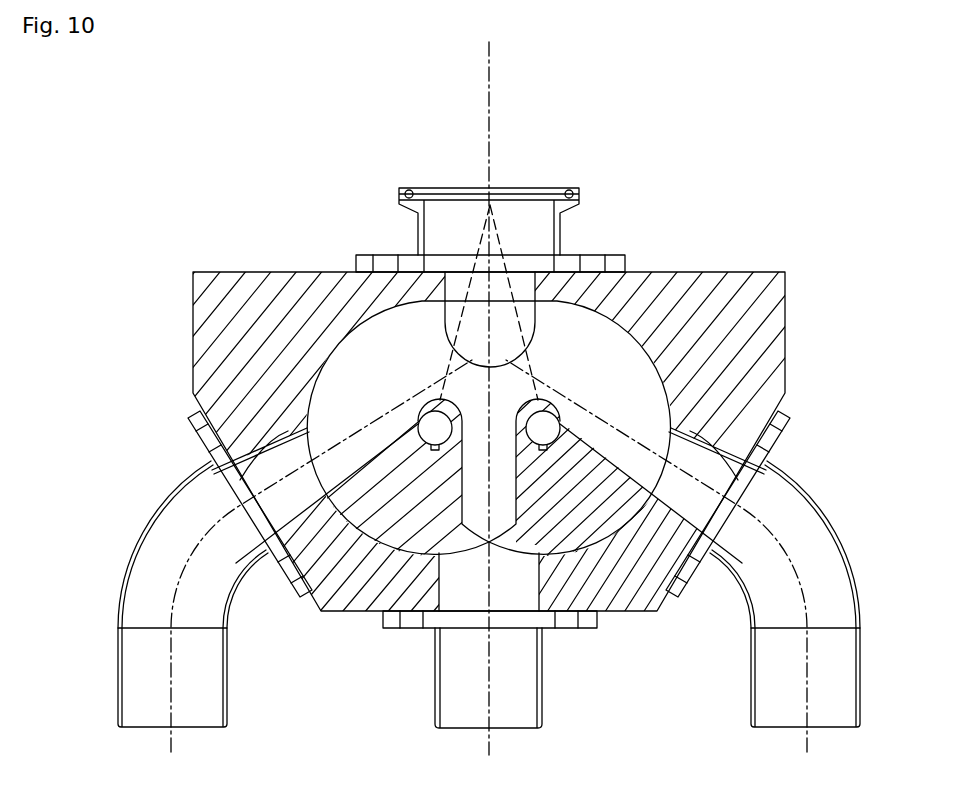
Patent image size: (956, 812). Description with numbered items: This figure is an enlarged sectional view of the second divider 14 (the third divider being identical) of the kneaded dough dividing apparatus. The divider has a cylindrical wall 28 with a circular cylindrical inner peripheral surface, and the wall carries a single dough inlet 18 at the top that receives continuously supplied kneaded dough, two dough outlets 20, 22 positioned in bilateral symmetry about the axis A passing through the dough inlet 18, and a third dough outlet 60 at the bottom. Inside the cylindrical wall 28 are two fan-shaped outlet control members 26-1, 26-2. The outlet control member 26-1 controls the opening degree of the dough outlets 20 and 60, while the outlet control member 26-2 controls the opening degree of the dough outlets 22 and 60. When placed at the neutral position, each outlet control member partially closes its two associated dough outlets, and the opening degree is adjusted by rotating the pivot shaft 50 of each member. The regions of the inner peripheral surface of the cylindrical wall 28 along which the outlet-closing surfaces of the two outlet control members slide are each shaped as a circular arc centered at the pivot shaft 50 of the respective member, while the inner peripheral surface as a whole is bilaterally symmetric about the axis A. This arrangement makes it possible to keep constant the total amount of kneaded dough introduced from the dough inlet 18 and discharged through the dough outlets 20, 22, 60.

The second divider 14 is at (182, 208).
The axis of the dough inlet A is at (490, 132).
The cylindrical wall 28 is at (786, 328).
The dough inlet 18 is at (550, 273).
The third dough outlet 60 is at (442, 572).
The pivot shaft 50 is at (420, 410).
The outlet control member 26-1 is at (338, 384).
The outlet control member 26-2 is at (676, 407).
The dough outlet 20 is at (228, 463).
The dough outlet 22 is at (760, 488).